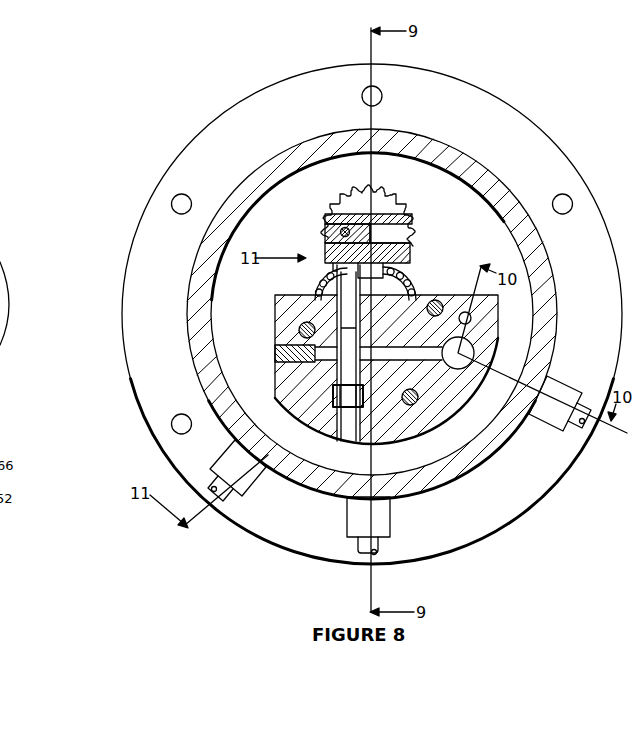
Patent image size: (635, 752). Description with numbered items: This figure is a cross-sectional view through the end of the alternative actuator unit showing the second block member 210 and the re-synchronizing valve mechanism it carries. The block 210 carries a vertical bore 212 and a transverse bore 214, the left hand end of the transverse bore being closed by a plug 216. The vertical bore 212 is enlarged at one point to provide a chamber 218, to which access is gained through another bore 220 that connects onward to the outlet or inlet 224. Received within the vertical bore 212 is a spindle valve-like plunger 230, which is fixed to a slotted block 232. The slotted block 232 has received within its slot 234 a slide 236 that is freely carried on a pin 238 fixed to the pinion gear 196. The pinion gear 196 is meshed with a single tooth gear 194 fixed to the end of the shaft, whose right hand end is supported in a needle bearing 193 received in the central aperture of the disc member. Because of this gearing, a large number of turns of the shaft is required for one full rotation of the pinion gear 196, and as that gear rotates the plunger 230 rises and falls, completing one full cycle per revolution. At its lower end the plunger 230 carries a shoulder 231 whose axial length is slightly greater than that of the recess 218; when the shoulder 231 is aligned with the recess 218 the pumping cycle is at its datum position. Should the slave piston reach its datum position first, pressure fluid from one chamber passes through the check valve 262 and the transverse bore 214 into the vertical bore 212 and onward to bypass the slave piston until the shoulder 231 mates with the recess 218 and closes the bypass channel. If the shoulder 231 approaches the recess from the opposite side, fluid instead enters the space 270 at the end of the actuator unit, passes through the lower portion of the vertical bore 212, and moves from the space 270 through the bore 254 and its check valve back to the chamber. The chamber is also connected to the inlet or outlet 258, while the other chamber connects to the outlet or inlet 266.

The pinion gear 196 is at (405, 210).
The slot 234 is at (404, 235).
The pin 238 is at (355, 214).
The slide 236 is at (325, 229).
The slotted block 232 is at (326, 240).
The spindle valve-like plunger 230 is at (320, 284).
The needle bearing 193 is at (408, 267).
The single tooth gear 194 is at (415, 281).
The transverse bore 214 is at (412, 347).
The plug 216 is at (274, 354).
The second block member 210 is at (445, 420).
The vertical bore 212 is at (345, 441).
The chamber 218 is at (333, 410).
The bore 220 is at (364, 400).
The shoulder 231 is at (355, 410).
The bore 254 is at (472, 318).
The check valve 262 is at (474, 352).
The inlet or outlet 258 is at (562, 381).
The outlet or inlet 266 is at (243, 496).
The outlet or inlet 224 is at (391, 528).
The space 270 is at (320, 462).